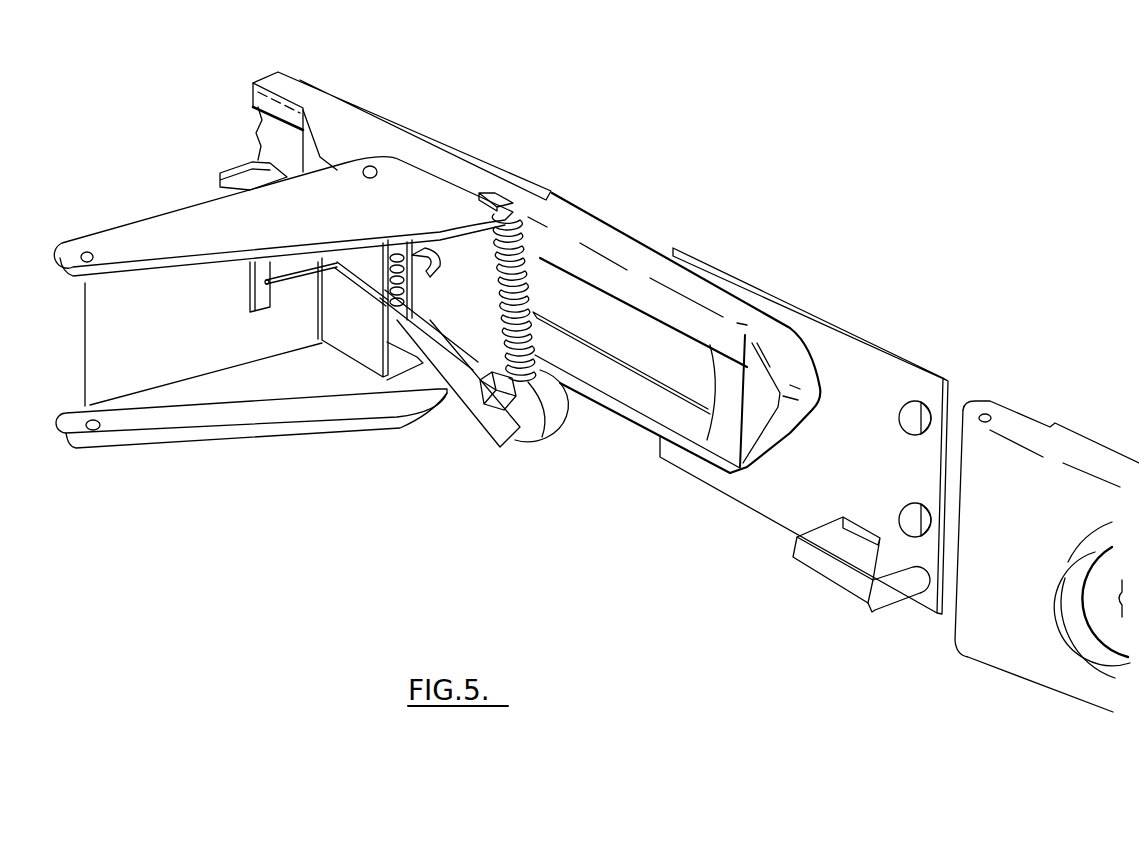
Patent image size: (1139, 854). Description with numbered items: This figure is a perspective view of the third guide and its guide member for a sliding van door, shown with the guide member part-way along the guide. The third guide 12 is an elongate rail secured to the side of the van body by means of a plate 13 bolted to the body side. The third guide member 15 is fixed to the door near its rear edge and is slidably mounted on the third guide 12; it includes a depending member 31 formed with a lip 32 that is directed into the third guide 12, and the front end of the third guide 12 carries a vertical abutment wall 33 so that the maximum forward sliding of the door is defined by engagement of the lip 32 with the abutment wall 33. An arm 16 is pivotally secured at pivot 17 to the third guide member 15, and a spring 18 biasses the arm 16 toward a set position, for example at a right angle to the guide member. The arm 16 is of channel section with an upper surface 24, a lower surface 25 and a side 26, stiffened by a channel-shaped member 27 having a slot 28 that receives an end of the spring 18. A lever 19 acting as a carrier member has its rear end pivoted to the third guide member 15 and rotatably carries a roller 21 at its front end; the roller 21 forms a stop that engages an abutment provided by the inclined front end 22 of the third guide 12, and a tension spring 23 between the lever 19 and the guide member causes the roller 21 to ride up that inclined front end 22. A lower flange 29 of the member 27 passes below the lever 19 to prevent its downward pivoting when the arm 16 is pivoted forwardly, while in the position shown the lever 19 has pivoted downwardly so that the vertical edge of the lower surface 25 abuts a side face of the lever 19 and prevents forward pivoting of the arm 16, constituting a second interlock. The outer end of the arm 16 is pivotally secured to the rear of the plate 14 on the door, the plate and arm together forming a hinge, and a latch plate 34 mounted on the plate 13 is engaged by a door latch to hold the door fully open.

The third guide 12 is at (699, 321).
The plate 13 is at (804, 431).
The plate 14 is at (1015, 428).
The third guide member 15 is at (373, 127).
The arm 16 is at (283, 302).
The pivot 17 is at (362, 178).
The spring 18 is at (297, 282).
The lever 19 is at (490, 423).
The roller 21 is at (563, 418).
The inclined front end 22 is at (783, 437).
The tension spring 23 is at (515, 245).
The upper surface 24 is at (248, 235).
The lower surface 25 is at (275, 397).
The side 26 is at (175, 336).
The channel-shaped member 27 is at (378, 353).
The slot 28 is at (370, 283).
The lower flange 29 is at (403, 365).
The depending member 31 is at (412, 318).
The lip 32 is at (443, 263).
The abutment wall 33 is at (745, 372).
The latch plate 34 is at (820, 565).